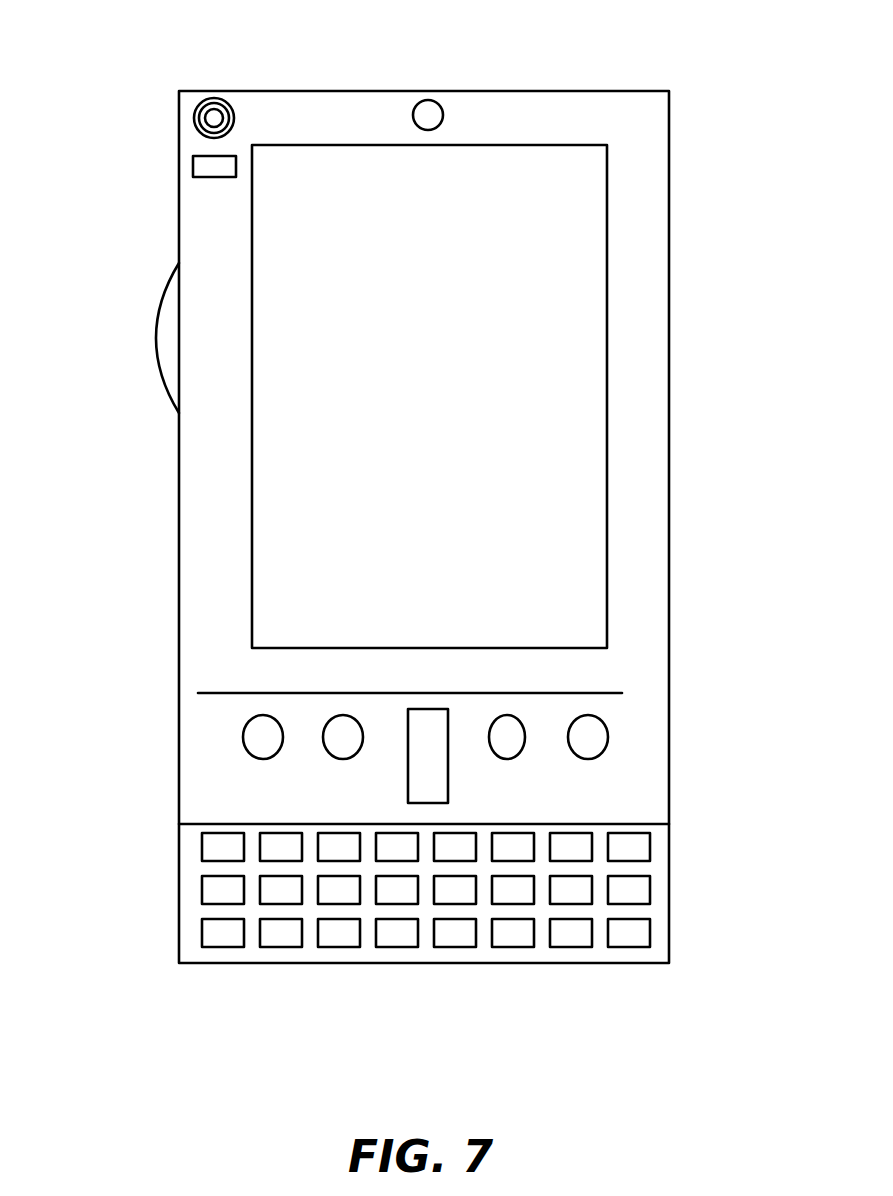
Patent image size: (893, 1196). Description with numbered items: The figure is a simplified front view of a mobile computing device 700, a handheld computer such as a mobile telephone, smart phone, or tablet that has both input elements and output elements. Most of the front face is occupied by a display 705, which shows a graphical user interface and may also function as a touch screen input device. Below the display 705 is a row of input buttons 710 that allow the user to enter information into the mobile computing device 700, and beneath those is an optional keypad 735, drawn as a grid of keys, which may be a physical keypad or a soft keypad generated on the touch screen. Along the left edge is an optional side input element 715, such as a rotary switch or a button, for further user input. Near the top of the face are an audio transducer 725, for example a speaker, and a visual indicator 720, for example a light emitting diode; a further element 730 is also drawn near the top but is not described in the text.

The mobile computing device 700 is at (657, 108).
The display 705 is at (360, 563).
The input buttons 710 is at (427, 763).
The side input element 715 is at (168, 337).
The visual indicator 720 is at (195, 172).
The audio transducer 725 is at (195, 120).
The speaker 730 is at (440, 113).
The keypad 735 is at (188, 939).